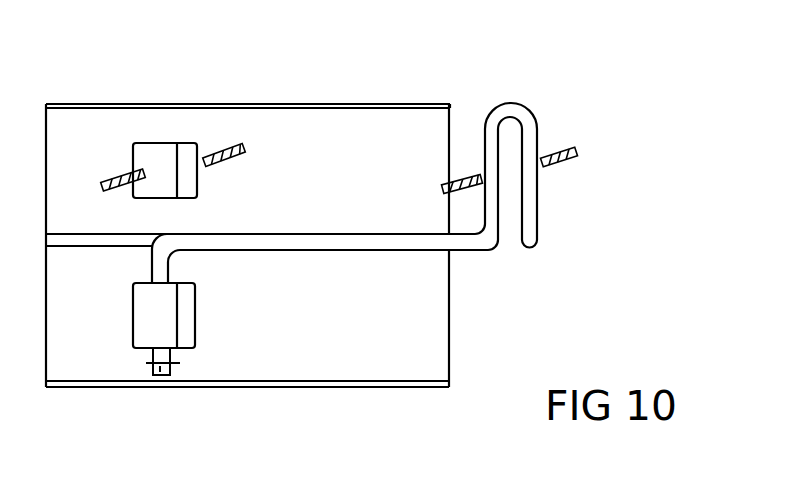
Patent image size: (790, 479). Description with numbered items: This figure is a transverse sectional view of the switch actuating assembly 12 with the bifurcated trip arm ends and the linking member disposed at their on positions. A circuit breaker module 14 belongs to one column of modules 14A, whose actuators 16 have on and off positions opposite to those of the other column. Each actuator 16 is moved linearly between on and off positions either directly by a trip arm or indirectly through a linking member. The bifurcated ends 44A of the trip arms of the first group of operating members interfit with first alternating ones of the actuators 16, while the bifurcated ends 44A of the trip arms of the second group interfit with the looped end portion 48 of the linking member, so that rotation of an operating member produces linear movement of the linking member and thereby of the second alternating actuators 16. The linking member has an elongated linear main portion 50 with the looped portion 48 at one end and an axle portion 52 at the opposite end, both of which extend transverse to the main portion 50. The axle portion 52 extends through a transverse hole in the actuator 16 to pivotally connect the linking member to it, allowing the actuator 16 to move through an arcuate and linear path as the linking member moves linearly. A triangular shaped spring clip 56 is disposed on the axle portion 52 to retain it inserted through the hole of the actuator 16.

The switch actuating assembly 12 is at (297, 232).
The circuit breaker module 14 is at (383, 103).
The column of modules 14A is at (335, 93).
The actuator 16 is at (157, 150).
The bifurcated end of trip arm 44A is at (112, 177).
The looped end portion 48 is at (537, 120).
The elongated linear main portion 50 is at (313, 250).
The axle portion 52 is at (161, 375).
The spring clip 56 is at (146, 359).